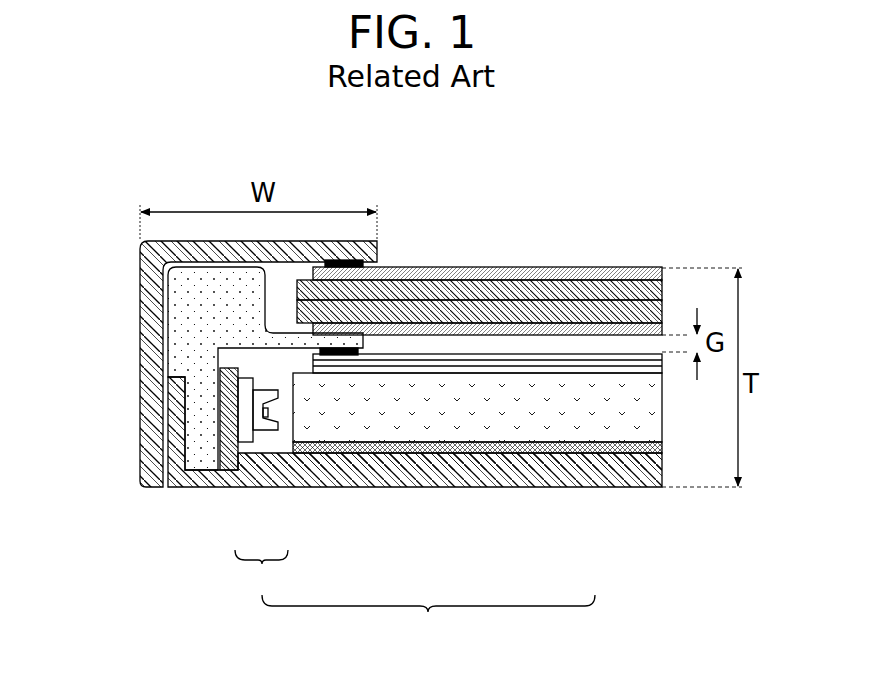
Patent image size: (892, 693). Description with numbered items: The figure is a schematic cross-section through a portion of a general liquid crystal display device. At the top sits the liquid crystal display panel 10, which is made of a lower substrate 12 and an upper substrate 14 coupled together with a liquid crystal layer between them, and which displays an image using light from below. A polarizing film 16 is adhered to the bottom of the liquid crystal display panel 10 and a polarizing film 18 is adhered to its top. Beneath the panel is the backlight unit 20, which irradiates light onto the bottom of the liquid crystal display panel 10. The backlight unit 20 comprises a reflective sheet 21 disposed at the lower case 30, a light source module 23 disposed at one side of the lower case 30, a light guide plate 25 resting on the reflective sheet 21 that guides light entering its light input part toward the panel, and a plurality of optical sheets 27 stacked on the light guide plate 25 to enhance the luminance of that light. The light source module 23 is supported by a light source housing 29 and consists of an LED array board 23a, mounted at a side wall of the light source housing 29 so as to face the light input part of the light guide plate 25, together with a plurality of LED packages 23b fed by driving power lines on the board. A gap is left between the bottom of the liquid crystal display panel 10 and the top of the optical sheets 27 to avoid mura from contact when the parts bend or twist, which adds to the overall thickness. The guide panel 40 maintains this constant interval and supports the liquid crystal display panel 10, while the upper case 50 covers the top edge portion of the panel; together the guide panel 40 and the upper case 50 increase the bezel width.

The liquid crystal display panel 10 is at (479, 241).
The lower substrate 12 is at (509, 312).
The upper substrate 14 is at (467, 290).
The polarizing film 16 is at (435, 192).
The polarizing film 18 is at (430, 274).
The backlight unit 20 is at (428, 617).
The reflective sheet 21 is at (545, 447).
The light source module 23 is at (261, 572).
The LED array board 23a is at (247, 437).
The LED packages 23b is at (267, 427).
The light guide plate 25 is at (465, 420).
The optical sheets 27 is at (612, 358).
The light source housing 29 is at (375, 465).
The lower case 30 is at (172, 437).
The guide panel 40 is at (195, 328).
The upper case 50 is at (157, 277).